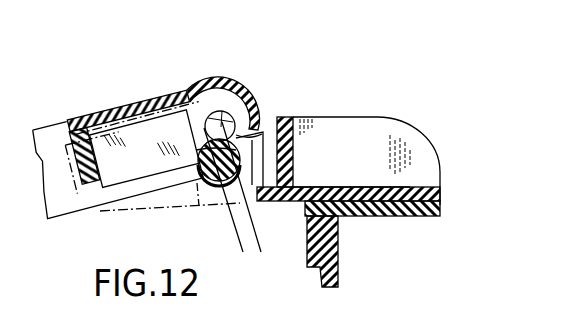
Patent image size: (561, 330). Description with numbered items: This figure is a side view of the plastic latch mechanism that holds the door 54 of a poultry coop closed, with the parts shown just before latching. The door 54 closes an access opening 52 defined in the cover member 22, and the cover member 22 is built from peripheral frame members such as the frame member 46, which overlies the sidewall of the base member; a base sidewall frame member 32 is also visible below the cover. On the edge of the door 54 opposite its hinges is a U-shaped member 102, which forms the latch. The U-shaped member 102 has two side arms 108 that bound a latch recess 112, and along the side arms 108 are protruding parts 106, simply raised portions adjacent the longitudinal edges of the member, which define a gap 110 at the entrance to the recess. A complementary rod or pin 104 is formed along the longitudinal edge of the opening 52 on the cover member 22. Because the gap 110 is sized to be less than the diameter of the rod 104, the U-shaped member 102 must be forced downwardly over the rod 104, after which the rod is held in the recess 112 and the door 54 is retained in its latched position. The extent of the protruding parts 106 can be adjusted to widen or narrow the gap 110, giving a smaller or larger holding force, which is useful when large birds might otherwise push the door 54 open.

The cover member 22 is at (371, 113).
The outer peripheral frame member 32 is at (388, 212).
The peripheral frame member 46 is at (417, 187).
The access opening 52 is at (127, 214).
The door 54 is at (93, 111).
The U-shaped member 102 is at (212, 76).
The rod or pin 104 is at (213, 205).
The protruding parts 106 is at (268, 150).
The side arms 108 is at (256, 112).
The gap 110 is at (254, 226).
The latch recess 112 is at (228, 125).